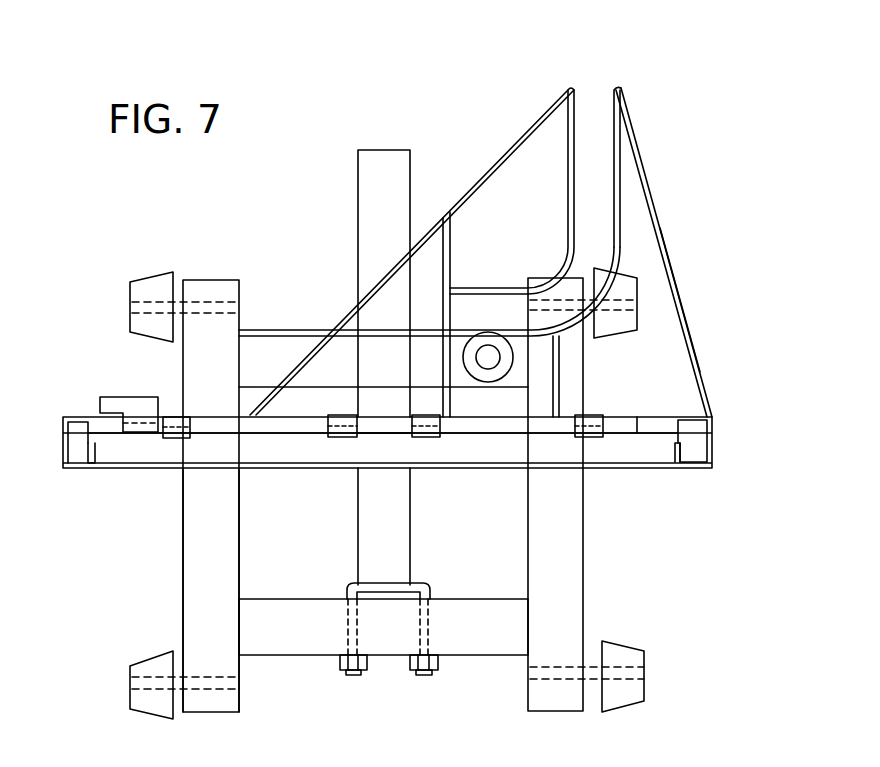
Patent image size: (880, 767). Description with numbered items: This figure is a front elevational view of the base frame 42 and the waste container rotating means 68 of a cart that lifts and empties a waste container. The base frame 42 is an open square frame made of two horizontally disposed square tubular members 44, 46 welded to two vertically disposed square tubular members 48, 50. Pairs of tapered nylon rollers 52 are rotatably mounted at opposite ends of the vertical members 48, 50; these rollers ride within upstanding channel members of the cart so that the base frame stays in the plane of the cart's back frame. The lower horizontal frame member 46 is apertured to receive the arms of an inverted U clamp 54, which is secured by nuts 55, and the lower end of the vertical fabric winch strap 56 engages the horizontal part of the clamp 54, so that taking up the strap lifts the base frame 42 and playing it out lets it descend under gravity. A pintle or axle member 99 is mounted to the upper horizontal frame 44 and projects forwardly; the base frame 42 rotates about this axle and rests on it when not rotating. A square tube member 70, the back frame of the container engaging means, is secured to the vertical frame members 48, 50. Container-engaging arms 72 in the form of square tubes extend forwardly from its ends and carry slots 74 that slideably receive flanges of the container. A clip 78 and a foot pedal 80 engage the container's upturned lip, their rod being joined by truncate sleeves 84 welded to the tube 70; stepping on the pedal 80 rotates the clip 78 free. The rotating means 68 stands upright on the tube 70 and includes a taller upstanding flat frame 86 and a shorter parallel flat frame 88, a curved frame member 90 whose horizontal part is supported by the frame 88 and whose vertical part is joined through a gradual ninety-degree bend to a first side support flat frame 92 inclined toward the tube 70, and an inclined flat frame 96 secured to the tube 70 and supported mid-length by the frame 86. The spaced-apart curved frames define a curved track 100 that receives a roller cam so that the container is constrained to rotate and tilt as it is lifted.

The base frame 42 is at (313, 300).
The horizontally disposed square tubular member 44 is at (262, 333).
The lower horizontal frame member 46 is at (277, 644).
The vertically disposed square tubular member 48 is at (200, 544).
The vertically disposed square tubular member 50 is at (570, 564).
The tapered nylon rollers 52 is at (150, 272).
The inverted U clamp 54 is at (413, 580).
The nuts 55 is at (352, 675).
The fabric winch strap 56 is at (413, 150).
The waste container rotating means 68 is at (655, 153).
The square tube member 70 is at (350, 457).
The container-engaging arms 72 is at (73, 466).
The slots 74 is at (97, 464).
The clip 78 is at (620, 412).
The foot pedal 80 is at (388, 428).
The truncate sleeves 84 is at (332, 436).
The upstanding flat frame member 86 is at (451, 258).
The upstanding flat frame member 88 is at (558, 367).
The curved frame member 90 is at (620, 222).
The first side support flat frame 92 is at (690, 333).
The inclined flat frame 96 is at (465, 192).
The pintle or axle member 99 is at (463, 357).
The curved track 100 is at (603, 82).